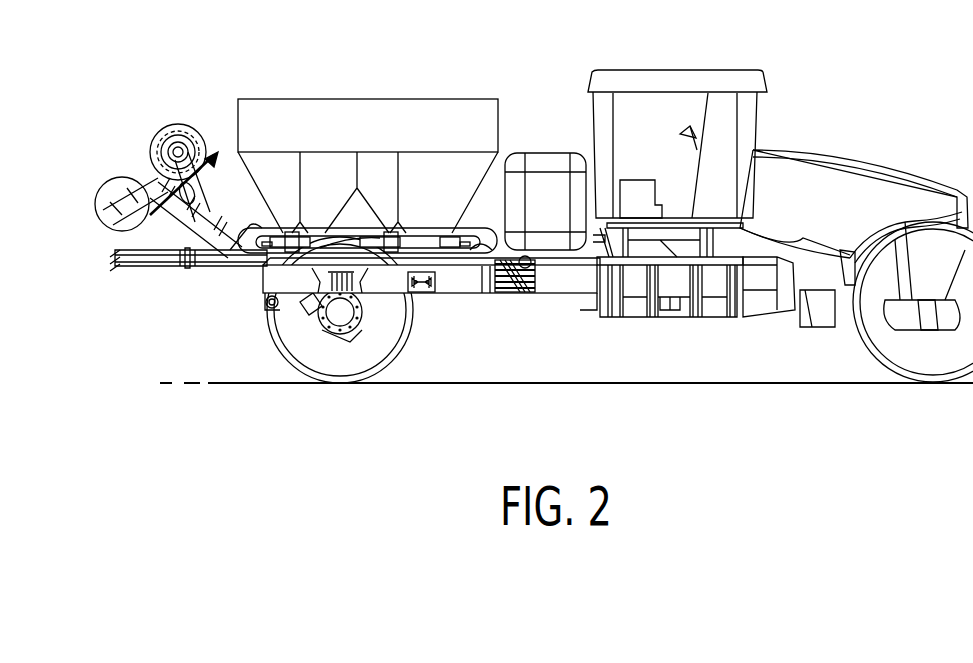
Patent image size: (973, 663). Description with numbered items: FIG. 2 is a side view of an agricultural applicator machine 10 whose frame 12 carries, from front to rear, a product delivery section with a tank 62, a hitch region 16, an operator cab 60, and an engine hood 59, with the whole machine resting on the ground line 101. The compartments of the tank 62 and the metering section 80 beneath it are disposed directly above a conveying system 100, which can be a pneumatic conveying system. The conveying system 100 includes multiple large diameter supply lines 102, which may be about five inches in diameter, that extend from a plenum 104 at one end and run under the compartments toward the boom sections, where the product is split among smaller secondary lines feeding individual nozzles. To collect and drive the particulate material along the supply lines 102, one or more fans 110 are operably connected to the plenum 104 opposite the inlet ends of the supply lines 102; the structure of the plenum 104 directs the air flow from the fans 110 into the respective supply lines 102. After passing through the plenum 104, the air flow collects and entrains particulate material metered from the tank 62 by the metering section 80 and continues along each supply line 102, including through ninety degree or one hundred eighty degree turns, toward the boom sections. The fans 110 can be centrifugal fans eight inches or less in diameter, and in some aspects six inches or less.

The agricultural vehicle 10 is at (659, 350).
The chassis frame 12 is at (778, 142).
The hitch assembly 16 is at (530, 292).
The hood 59 is at (884, 165).
The operator cab 60 is at (690, 72).
The tank 62 is at (340, 84).
The metering section 80 is at (415, 300).
The conveying system 100 is at (285, 262).
The ground surface 101 is at (850, 383).
The supply lines 102 is at (220, 266).
The plenum 104 is at (166, 266).
The fans 110 is at (117, 180).